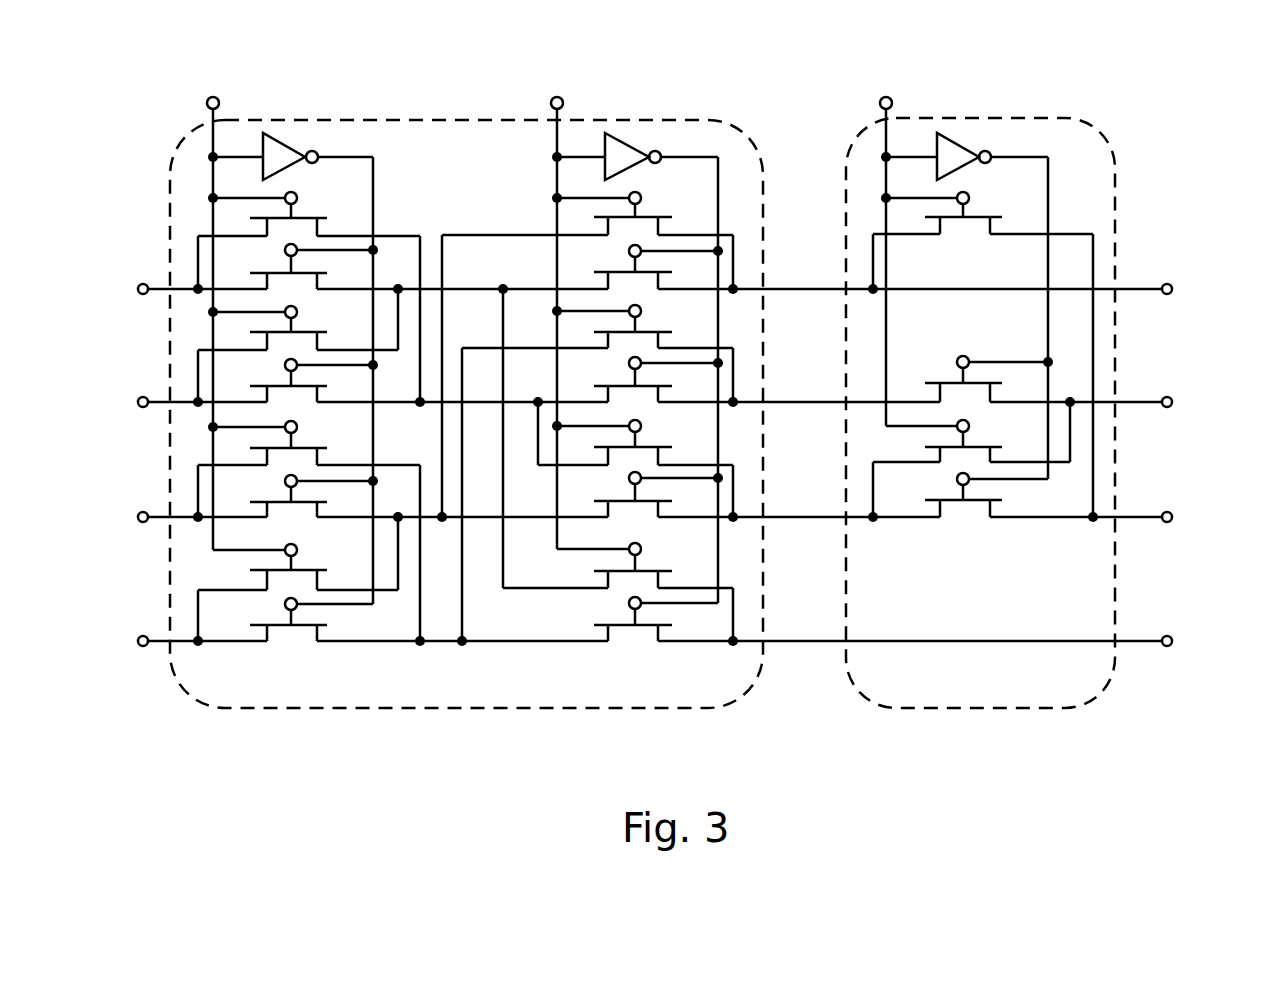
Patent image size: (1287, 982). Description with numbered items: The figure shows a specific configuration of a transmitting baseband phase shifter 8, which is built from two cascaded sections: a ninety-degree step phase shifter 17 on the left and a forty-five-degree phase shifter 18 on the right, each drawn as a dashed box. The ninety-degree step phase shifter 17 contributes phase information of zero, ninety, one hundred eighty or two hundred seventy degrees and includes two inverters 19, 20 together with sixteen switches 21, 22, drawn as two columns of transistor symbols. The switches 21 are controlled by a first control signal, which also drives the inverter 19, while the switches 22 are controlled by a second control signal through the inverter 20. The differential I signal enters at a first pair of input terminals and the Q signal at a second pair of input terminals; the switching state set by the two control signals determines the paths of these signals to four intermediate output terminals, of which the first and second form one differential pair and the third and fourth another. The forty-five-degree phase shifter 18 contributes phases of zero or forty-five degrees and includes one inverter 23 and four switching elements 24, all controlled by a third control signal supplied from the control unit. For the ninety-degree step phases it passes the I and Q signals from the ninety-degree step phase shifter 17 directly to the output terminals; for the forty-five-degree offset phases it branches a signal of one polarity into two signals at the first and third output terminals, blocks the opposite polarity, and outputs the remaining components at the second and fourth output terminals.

The transmitting baseband phase shifter 8 is at (710, 28).
The 90° step phase shifter 17 is at (180, 180).
The 45° phase shifter 18 is at (1115, 188).
The inverter 19 is at (280, 133).
The inverter 20 is at (628, 133).
The switches 21 is at (277, 628).
The switches 22 is at (620, 628).
The inverter 23 is at (952, 133).
The switching elements 24 is at (960, 503).